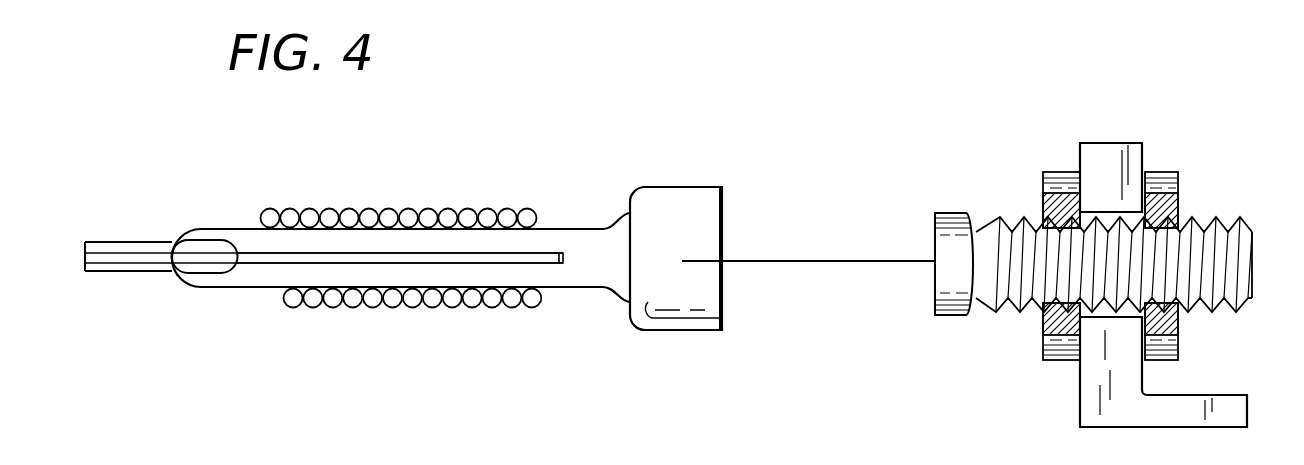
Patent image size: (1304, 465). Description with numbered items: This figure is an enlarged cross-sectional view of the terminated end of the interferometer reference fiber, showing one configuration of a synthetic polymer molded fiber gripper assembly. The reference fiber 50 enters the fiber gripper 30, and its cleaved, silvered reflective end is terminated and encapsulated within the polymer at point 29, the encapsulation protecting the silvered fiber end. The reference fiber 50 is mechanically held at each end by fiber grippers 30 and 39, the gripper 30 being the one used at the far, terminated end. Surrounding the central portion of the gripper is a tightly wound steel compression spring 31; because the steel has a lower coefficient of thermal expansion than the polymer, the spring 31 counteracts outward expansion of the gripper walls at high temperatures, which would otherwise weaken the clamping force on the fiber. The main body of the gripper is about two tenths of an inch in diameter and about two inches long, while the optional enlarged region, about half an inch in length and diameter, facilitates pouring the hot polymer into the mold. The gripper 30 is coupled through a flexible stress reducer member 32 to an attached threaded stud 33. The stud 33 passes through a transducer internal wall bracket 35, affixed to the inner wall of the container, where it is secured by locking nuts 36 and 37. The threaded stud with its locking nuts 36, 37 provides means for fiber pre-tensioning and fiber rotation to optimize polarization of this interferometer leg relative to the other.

The point 29 is at (563, 267).
The fiber gripper 30 is at (680, 196).
The compression spring 31 is at (392, 213).
The flexible stress reliever member 32 is at (795, 260).
The threaded stud 33 is at (935, 288).
The bracket 35 is at (1078, 388).
The locking nut 36 is at (1043, 183).
The locking nut 37 is at (1180, 200).
The fiber gripper 39 is at (606, 243).
The wire cable 50 is at (121, 242).